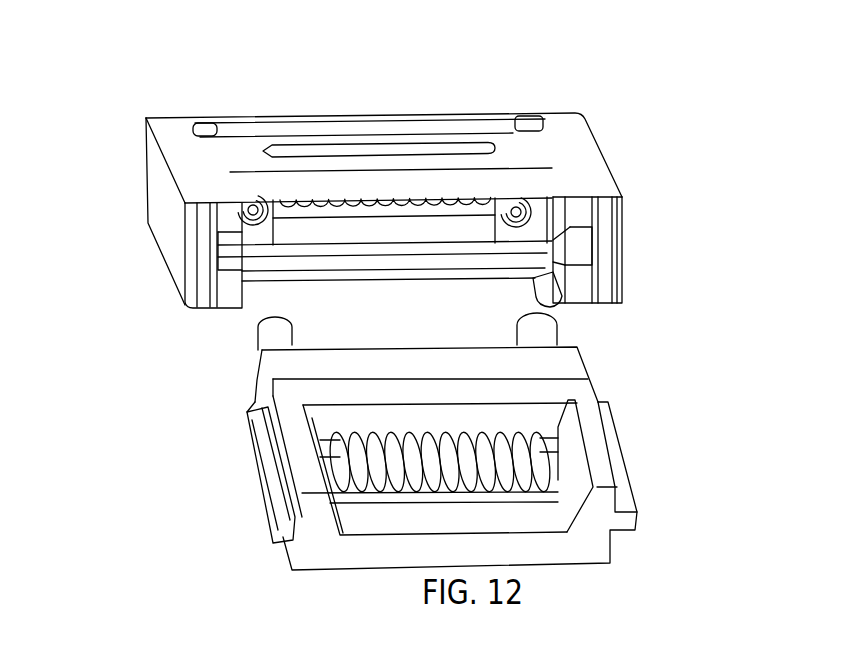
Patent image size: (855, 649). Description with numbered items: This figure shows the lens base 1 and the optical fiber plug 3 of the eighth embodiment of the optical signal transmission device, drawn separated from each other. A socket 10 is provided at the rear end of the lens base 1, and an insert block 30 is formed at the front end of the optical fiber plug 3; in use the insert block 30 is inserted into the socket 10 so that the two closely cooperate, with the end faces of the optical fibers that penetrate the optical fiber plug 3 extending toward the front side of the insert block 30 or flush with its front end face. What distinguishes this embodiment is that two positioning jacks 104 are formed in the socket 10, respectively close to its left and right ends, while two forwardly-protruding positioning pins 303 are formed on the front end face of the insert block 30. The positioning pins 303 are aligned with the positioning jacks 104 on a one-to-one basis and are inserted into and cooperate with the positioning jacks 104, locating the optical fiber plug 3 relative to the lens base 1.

The lens base 1 is at (562, 152).
The socket 10 is at (475, 230).
The positioning jack 104 is at (250, 203).
The optical fiber plug 3 is at (596, 445).
The insert block 30 is at (559, 362).
The positioning pin 303 is at (278, 333).